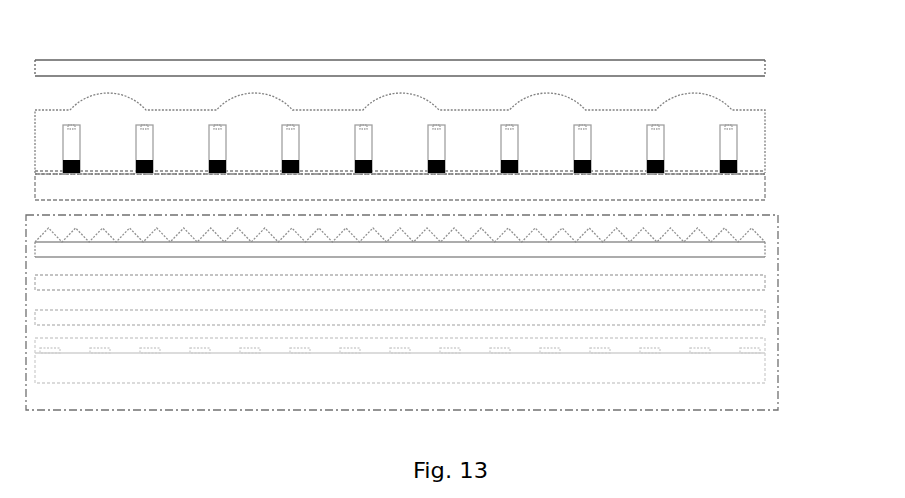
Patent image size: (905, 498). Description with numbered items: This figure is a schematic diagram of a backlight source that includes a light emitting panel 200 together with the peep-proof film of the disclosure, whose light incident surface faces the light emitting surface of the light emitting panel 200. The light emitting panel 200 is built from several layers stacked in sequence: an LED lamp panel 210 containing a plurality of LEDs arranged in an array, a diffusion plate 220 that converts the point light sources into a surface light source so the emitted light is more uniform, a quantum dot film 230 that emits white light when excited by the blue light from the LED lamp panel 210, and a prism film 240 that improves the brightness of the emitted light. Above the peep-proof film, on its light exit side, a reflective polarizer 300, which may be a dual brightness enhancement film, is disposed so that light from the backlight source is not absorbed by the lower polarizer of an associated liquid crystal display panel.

The reflective polarizer 300 is at (502, 70).
The light emitting panel 200 is at (780, 312).
The prism film 240 is at (758, 250).
The quantum dot film 230 is at (752, 282).
The diffusion plate 220 is at (752, 308).
The LED lamp panel 210 is at (763, 367).